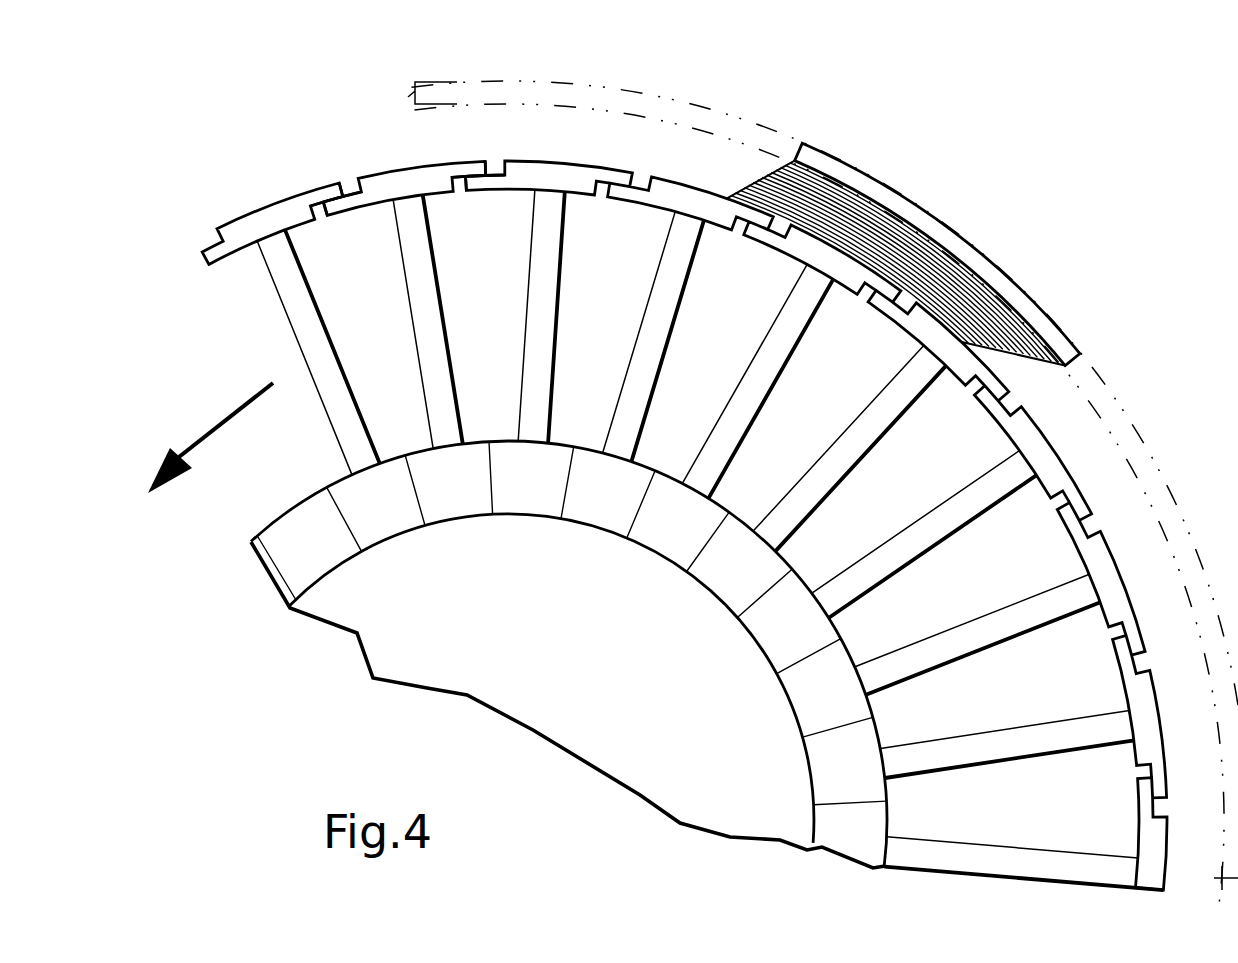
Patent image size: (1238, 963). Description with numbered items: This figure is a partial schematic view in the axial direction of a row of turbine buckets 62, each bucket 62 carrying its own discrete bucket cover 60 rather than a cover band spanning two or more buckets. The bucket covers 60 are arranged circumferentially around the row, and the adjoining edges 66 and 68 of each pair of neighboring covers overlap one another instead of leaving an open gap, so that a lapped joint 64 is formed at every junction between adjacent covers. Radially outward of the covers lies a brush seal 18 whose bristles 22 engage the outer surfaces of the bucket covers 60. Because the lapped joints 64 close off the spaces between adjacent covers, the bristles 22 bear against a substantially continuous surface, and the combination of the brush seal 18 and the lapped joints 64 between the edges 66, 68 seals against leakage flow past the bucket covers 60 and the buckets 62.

The brush seal 18 is at (945, 194).
The bristles 22 is at (766, 184).
The bucket cover 60 is at (242, 227).
The guide vane 62 is at (297, 312).
The lapped joint 64 is at (320, 150).
The adjoining edge 66 is at (320, 190).
The adjoining edge 68 is at (341, 207).